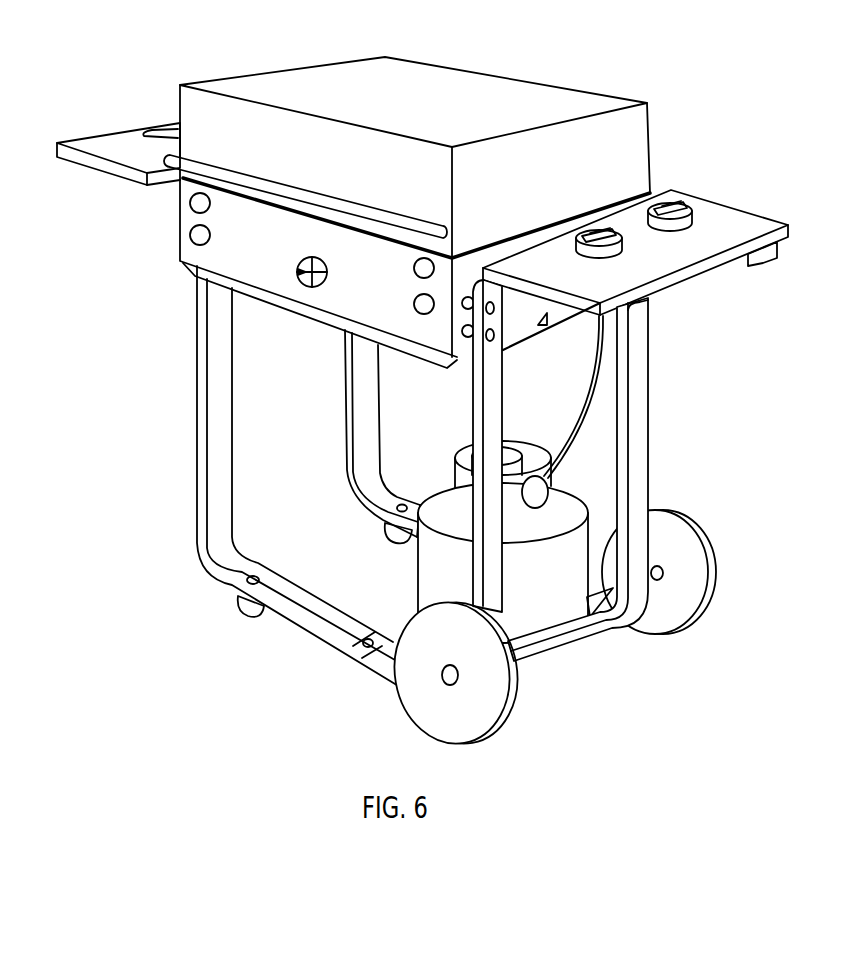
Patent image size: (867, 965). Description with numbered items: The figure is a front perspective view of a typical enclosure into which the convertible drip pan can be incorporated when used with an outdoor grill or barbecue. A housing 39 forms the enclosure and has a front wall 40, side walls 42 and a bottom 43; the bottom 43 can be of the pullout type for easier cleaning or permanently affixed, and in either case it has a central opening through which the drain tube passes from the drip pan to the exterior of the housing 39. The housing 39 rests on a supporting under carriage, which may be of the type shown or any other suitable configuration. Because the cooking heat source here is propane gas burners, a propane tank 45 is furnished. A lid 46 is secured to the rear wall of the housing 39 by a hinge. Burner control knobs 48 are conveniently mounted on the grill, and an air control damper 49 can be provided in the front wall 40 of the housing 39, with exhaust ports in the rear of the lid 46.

The housing 39 is at (181, 207).
The front wall 40 is at (233, 248).
The side walls 42 is at (520, 313).
The bottom 43 is at (313, 315).
The propane tank 45 is at (553, 611).
The lid 46 is at (486, 98).
The burner control knobs 48 is at (673, 201).
The air control damper 49 is at (297, 273).